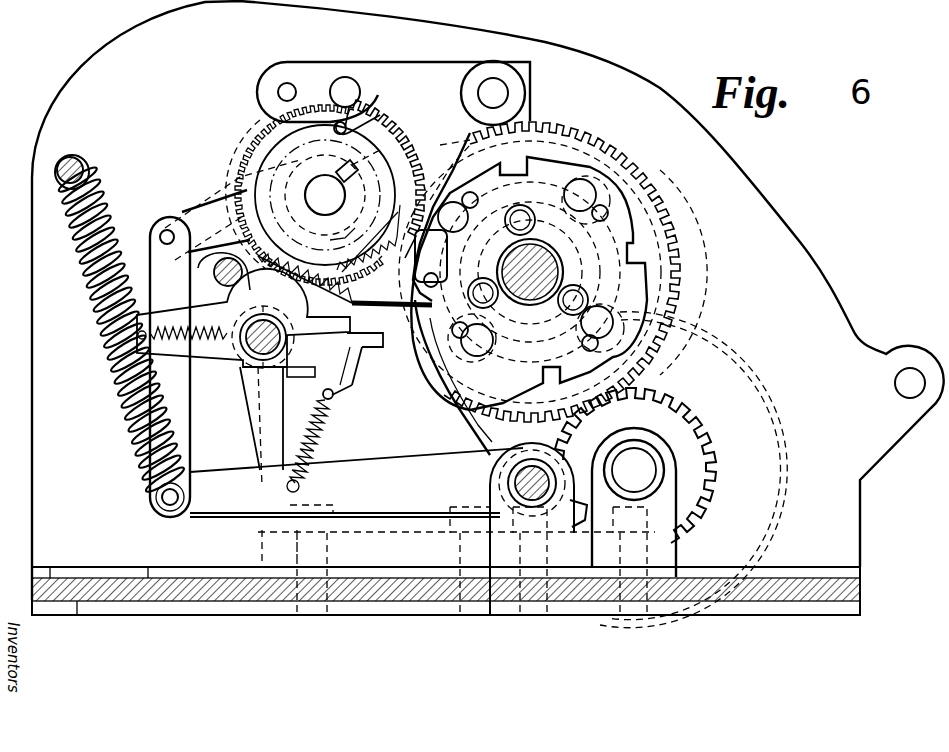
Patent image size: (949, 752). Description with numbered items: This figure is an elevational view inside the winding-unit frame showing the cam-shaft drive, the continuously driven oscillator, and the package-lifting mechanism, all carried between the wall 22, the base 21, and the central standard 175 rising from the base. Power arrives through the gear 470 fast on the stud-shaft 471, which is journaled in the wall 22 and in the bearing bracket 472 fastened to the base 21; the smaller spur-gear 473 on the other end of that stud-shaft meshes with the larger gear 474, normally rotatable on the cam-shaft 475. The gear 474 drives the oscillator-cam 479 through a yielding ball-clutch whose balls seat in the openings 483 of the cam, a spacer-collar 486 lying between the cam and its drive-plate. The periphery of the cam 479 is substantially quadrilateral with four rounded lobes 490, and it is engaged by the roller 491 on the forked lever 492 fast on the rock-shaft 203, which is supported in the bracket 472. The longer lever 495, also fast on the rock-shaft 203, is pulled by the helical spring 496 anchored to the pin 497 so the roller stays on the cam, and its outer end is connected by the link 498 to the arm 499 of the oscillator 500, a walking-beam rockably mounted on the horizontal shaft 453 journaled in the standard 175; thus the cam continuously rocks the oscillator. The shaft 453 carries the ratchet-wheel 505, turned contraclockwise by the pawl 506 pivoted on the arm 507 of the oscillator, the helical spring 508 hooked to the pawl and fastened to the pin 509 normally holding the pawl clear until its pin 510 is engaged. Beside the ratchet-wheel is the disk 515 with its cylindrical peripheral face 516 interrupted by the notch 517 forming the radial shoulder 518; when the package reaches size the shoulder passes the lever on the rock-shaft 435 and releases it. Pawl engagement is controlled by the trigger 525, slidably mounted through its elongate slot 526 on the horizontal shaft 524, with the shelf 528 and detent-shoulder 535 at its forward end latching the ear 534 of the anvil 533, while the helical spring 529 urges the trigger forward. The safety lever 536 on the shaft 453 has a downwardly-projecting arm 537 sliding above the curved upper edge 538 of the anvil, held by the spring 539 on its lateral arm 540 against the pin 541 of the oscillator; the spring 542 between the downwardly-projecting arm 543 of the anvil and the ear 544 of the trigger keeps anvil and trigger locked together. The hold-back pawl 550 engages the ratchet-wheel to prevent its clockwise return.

The base 21 is at (32, 590).
The wall 22 is at (735, 180).
The standard 175 is at (258, 528).
The rock-shaft 203 is at (512, 485).
The rock-shaft 435 is at (245, 282).
The horizontal shaft 453 is at (320, 180).
The gear 470 is at (765, 390).
The stud-shaft 471 is at (645, 476).
The bearing bracket 472 is at (668, 525).
The smaller spur-gear 473 is at (706, 452).
The larger gear 474 is at (668, 236).
The cam-shaft 475 is at (565, 262).
The oscillator-cam 479 is at (655, 218).
The openings 483 is at (598, 275).
The spacer-collar 486 is at (665, 252).
The rounded lobes 490 is at (612, 153).
The roller 491 is at (452, 455).
The forked lever 492 is at (486, 478).
The longer lever 495 is at (420, 515).
The helical spring 496 is at (92, 190).
The pin 497 is at (72, 160).
The link 498 is at (150, 258).
The arm 499 is at (188, 212).
The oscillator 500 is at (242, 182).
The ratchet-wheel 505 is at (405, 148).
The pawl 506 is at (440, 279).
The arm 507 is at (448, 260).
The helical spring 508 is at (294, 222).
The pin 509 is at (284, 204).
The pin 510 is at (432, 307).
The disk 515 is at (277, 147).
The peripheral face 516 is at (252, 146).
The notch 517 is at (352, 130).
The radial shoulder 518 is at (368, 120).
The horizontal shaft 524 is at (310, 285).
The trigger 525 is at (200, 355).
The elongate slot 526 is at (242, 385).
The shelf 528 is at (375, 340).
The helical spring 529 is at (237, 352).
The anvil 533 is at (296, 378).
The ear 534 is at (345, 390).
The detent-shoulder 535 is at (360, 365).
The safety lever 536 is at (246, 160).
The arm 537 is at (345, 222).
The curved upper edge 538 is at (305, 330).
The spring 539 is at (330, 241).
The lateral arm 540 is at (410, 170).
The pin 541 is at (338, 266).
The spring 542 is at (312, 455).
The downwardly-projecting arm 543 is at (252, 447).
The ear 544 is at (334, 398).
The hold-back pawl 550 is at (228, 285).